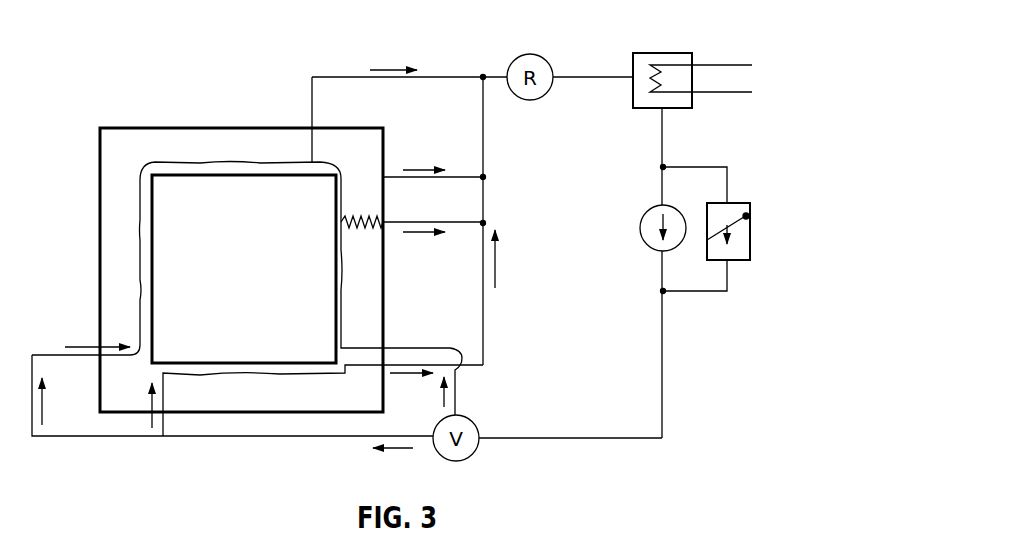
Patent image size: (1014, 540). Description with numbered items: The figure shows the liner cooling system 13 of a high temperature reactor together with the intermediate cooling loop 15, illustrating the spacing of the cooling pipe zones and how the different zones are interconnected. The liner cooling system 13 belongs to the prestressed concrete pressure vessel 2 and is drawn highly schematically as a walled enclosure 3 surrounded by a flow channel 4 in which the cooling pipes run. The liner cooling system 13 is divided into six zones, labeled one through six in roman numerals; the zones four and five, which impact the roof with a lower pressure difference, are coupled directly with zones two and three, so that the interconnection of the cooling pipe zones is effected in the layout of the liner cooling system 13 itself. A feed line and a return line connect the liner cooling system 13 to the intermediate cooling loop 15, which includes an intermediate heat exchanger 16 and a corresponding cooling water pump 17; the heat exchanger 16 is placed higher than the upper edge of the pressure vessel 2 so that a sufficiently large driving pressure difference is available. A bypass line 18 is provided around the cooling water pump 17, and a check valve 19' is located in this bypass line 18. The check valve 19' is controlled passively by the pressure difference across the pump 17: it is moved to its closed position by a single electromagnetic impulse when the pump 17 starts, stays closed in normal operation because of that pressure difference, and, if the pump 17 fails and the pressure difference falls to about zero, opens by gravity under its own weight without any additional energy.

The prestressed concrete pressure vessel 2 is at (118, 278).
The inner vessel 3 is at (185, 232).
The flow channel 4 is at (138, 187).
The liner cooling system 13 is at (212, 162).
The intermediate cooling loop 15 is at (445, 77).
The intermediate heat exchanger 16 is at (657, 53).
The cooling water pump 17 is at (648, 232).
The bypass line 18 is at (700, 167).
The check valve 19' is at (756, 234).